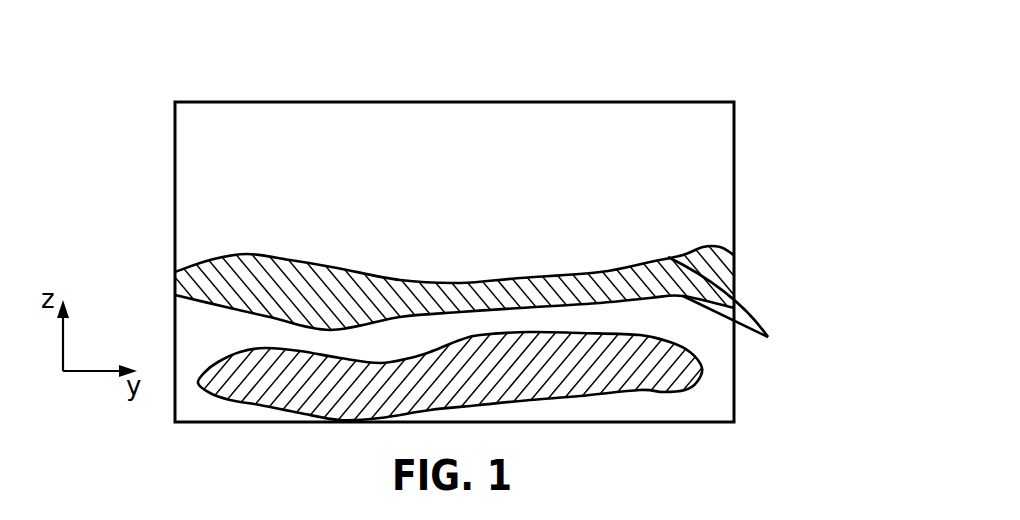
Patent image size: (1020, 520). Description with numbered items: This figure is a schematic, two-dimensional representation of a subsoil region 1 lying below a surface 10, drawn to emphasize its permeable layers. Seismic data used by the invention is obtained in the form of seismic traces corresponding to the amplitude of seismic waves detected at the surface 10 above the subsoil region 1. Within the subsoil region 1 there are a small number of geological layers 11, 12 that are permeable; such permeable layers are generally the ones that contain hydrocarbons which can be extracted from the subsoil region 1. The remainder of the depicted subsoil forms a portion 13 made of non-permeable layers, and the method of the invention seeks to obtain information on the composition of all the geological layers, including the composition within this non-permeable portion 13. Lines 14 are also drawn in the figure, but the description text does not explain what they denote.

The subsoil region 1 is at (748, 117).
The surface 10 is at (314, 88).
The permeable geological layer 11 is at (717, 273).
The permeable geological layer 12 is at (673, 377).
The portion of non-permeable layers 13 is at (716, 194).
The delamination / crack lines 14 is at (736, 304).